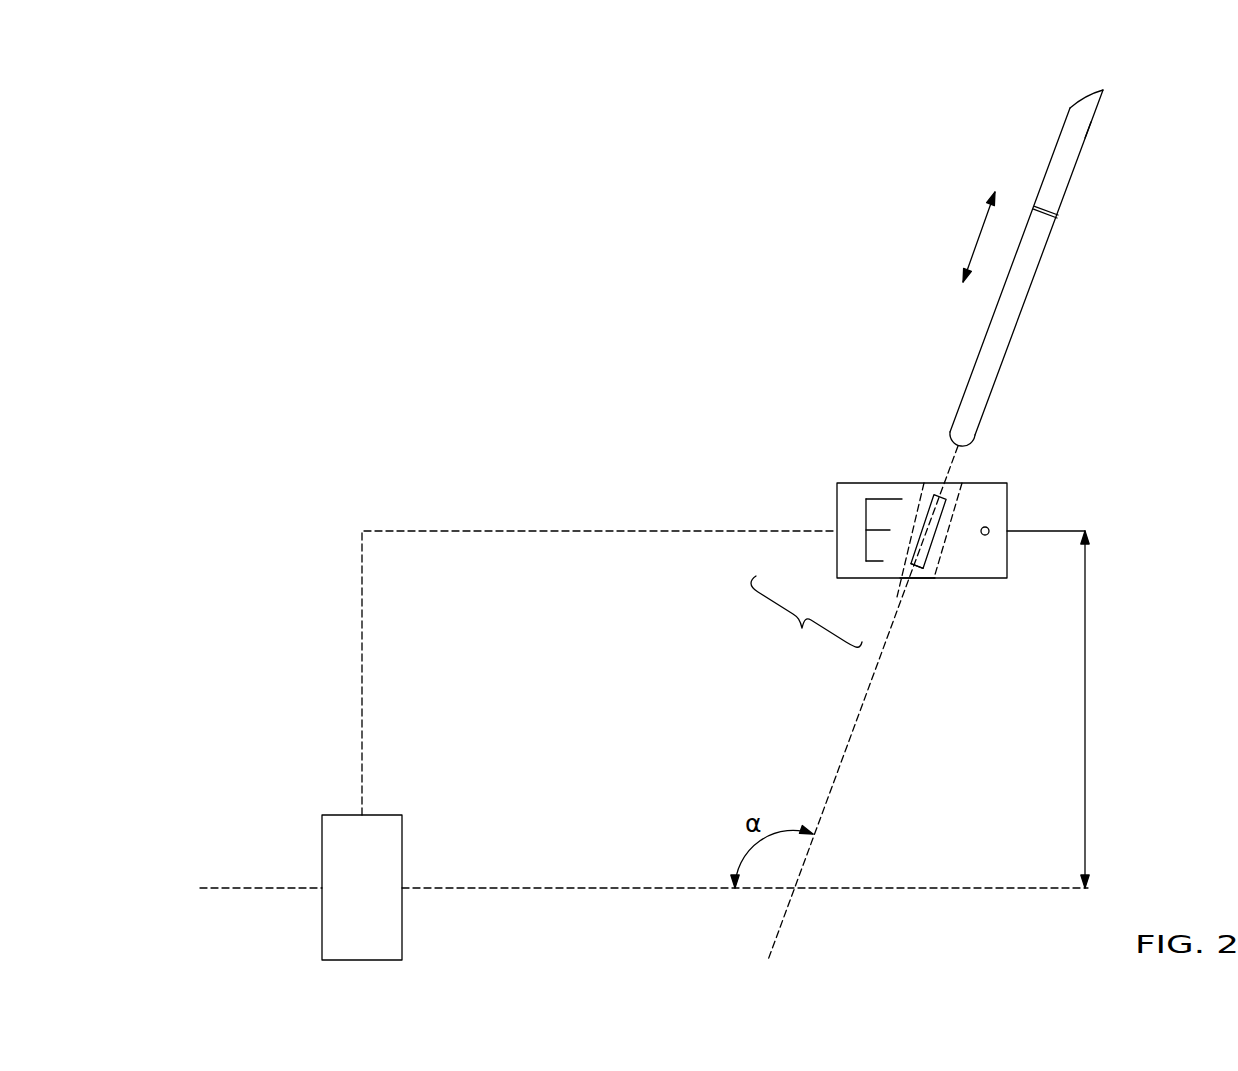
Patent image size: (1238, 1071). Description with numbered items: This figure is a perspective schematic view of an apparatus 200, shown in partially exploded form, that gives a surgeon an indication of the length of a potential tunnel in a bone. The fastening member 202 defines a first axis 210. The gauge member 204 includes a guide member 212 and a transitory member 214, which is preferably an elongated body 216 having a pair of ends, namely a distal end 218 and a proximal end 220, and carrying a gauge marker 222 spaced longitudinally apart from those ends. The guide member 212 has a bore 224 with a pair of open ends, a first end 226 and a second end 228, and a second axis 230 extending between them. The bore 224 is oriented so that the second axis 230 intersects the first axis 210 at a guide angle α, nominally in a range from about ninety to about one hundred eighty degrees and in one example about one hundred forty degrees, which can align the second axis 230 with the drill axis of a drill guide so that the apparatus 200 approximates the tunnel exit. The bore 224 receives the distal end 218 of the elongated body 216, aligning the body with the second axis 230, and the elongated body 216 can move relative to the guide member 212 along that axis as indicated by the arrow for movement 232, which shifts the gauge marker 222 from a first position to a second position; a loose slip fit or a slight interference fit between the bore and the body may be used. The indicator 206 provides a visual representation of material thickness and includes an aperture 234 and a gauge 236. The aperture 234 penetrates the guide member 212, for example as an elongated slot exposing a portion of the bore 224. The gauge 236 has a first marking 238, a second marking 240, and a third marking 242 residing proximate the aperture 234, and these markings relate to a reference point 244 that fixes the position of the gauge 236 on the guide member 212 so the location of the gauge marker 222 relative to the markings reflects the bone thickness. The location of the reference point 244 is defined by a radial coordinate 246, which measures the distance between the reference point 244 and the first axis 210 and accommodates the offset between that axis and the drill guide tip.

The apparatus 200 is at (433, 308).
The fastening member 202 is at (285, 853).
The gauge member 204 is at (1090, 510).
The indicator 206 is at (806, 618).
The first axis 210 is at (978, 888).
The guide member 212 is at (1008, 492).
The transitory member 214 is at (1103, 180).
The elongated body 216 is at (1085, 122).
The distal end 218 is at (947, 447).
The proximal end 220 is at (1110, 80).
The gauge marker 222 is at (1058, 215).
The bore 224 is at (947, 535).
The first end 226 is at (921, 585).
The second end 228 is at (962, 477).
The second axis 230 is at (838, 762).
The movement 232 is at (978, 238).
The aperture 234 is at (912, 568).
The gauge 236 is at (853, 547).
The first marking 238 is at (876, 497).
The second marking 240 is at (879, 528).
The third marking 242 is at (880, 558).
The reference point 244 is at (989, 530).
The radial coordinate 246 is at (1087, 686).